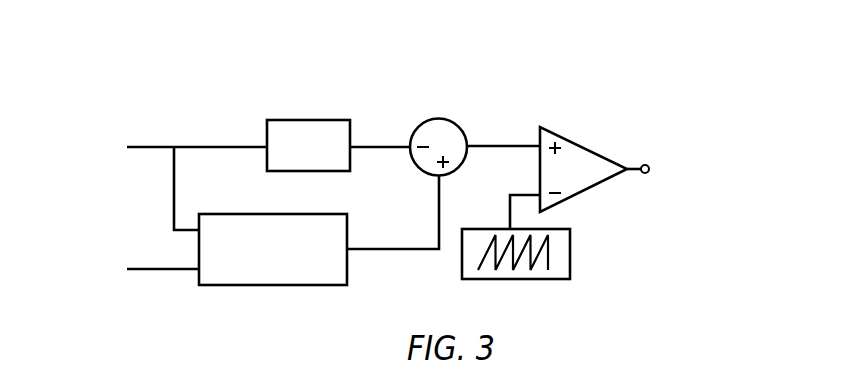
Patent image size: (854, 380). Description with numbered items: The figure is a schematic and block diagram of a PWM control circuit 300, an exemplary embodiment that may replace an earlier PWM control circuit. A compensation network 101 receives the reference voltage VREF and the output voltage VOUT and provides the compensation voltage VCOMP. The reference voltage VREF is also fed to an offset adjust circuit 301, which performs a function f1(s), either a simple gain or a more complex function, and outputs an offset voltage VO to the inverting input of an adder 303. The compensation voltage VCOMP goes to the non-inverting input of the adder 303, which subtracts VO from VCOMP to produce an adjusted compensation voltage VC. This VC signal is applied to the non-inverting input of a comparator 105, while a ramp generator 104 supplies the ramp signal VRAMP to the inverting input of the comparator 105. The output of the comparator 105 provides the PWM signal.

The PWM control circuit 300 is at (626, 104).
The offset adjust circuit 301 is at (308, 120).
The adder 303 is at (447, 118).
The comparator 105 is at (588, 179).
The ramp generator 104 is at (570, 265).
The compensation network 101 is at (290, 263).